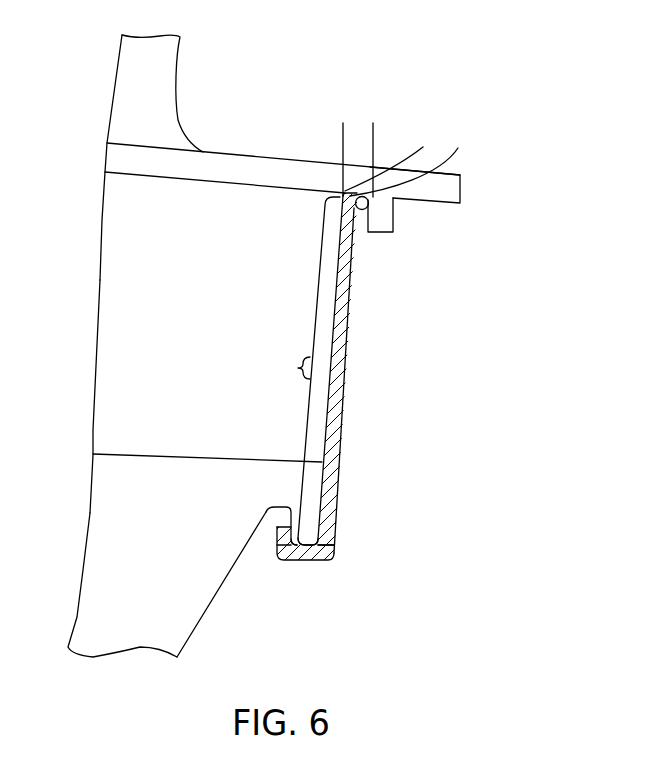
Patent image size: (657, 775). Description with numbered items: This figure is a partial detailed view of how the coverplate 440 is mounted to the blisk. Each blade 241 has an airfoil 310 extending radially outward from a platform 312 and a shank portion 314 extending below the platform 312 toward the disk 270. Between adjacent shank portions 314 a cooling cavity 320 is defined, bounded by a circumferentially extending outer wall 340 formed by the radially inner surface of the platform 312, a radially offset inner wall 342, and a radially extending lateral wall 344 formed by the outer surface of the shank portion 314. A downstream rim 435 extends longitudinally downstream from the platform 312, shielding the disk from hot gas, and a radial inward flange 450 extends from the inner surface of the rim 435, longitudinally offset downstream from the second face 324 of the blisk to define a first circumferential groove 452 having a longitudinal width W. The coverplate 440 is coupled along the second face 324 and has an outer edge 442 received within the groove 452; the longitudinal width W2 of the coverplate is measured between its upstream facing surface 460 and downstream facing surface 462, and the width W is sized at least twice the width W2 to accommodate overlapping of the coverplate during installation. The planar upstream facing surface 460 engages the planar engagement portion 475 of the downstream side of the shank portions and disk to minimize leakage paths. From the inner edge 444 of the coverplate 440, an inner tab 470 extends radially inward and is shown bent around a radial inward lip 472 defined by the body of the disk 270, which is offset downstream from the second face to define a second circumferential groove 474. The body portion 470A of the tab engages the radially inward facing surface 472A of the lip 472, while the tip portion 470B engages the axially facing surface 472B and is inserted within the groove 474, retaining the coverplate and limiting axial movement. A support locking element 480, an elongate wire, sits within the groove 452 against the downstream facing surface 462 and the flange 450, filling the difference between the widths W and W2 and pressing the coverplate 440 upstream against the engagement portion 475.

The blade 241 is at (170, 53).
The airfoil 310 is at (120, 90).
The platform 312 is at (227, 165).
The outer wall 340 is at (200, 183).
The shank portion 314 is at (115, 320).
The cooling cavity 320 is at (116, 418).
The lateral wall 344 is at (169, 434).
The inner wall 342 is at (200, 462).
The second face 324 is at (200, 632).
The disk 270 is at (102, 643).
The coverplate 440 is at (348, 327).
The upstream facing surface 460 is at (322, 428).
The downstream facing surface 462 is at (343, 413).
The inner edge 444 is at (335, 540).
The inner tab 470 is at (305, 562).
The body portion 470A is at (323, 557).
The tip portion 470B is at (280, 525).
The radial inward lip 472 is at (333, 510).
The radially inward facing surface 472A is at (312, 560).
The axially facing surface 472B is at (278, 527).
The second circumferential groove 474 is at (263, 551).
The engagement portion 475 is at (290, 370).
The longitudinal width W is at (405, 145).
The longitudinal width W2 is at (300, 353).
The downstream rim 435 is at (452, 187).
The radial inward flange 450 is at (392, 213).
The first circumferential groove 452 is at (359, 229).
The outer edge 442 is at (391, 155).
The support locking element 480 is at (412, 160).